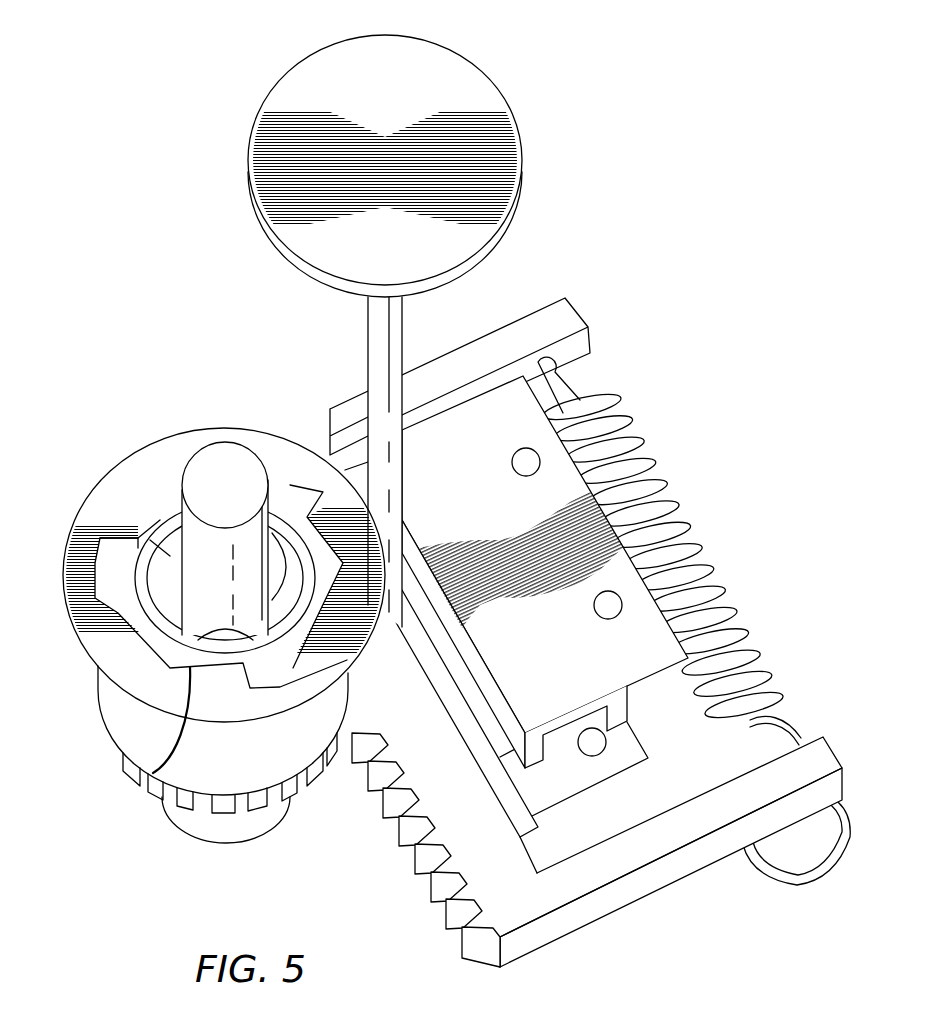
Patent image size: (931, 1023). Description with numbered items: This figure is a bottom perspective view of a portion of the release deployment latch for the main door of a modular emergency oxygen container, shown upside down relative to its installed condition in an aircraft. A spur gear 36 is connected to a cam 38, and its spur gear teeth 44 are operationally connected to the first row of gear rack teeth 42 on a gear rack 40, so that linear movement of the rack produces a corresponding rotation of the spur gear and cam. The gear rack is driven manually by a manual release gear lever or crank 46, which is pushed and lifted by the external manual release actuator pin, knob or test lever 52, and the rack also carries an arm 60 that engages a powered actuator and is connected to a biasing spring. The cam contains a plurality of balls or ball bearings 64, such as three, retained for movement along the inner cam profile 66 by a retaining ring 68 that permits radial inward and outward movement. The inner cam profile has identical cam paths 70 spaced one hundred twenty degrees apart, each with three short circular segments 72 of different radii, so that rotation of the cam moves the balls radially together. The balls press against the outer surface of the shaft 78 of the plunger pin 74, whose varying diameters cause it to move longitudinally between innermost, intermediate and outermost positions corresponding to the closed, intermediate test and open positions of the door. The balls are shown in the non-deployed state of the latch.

The spur gear 36 is at (220, 830).
The cam 38 is at (120, 712).
The gear rack 40 is at (480, 868).
The first row of gear rack teeth 42 is at (440, 883).
The spur gear teeth 44 is at (260, 798).
The manual release gear lever or crank 46 is at (573, 767).
The external manual release actuator pin, knob or test lever 52 is at (463, 98).
The arm 60 is at (560, 320).
The balls or ball bearings 64 is at (168, 552).
The inner cam profile 66 is at (293, 485).
The retaining ring 68 is at (140, 610).
The cam paths 70 is at (110, 548).
The short circular segments 72 is at (153, 773).
The plunger pin 74 is at (213, 470).
The shaft 78 is at (197, 578).